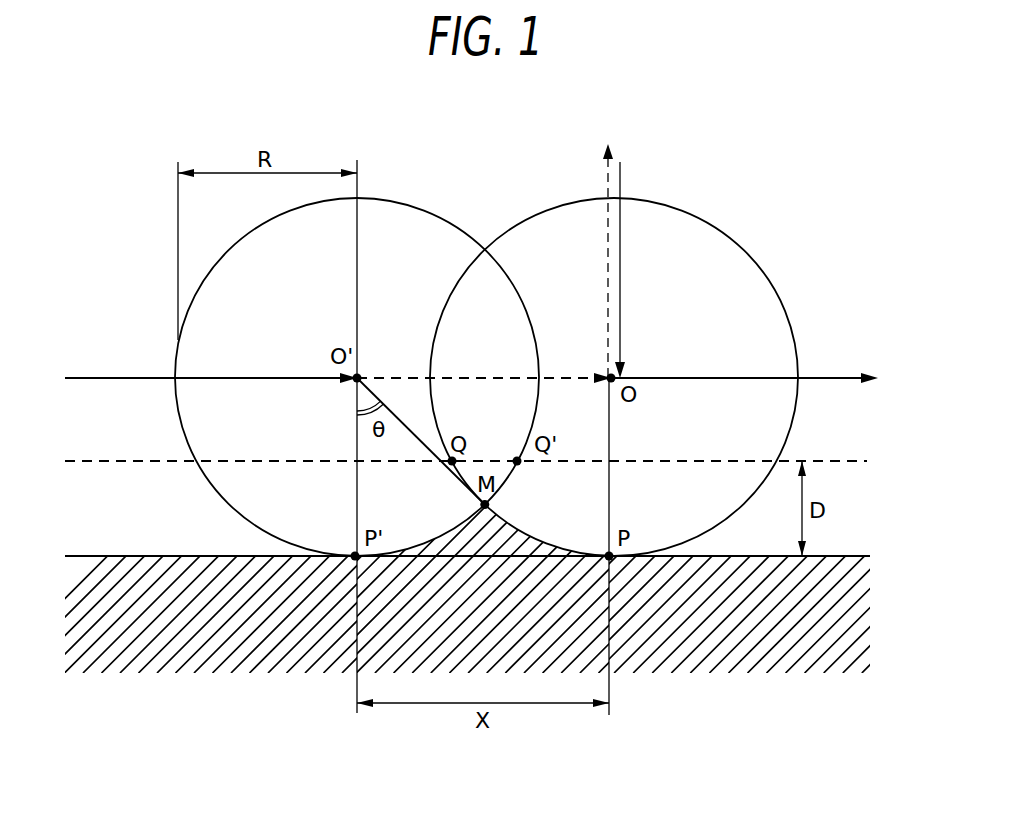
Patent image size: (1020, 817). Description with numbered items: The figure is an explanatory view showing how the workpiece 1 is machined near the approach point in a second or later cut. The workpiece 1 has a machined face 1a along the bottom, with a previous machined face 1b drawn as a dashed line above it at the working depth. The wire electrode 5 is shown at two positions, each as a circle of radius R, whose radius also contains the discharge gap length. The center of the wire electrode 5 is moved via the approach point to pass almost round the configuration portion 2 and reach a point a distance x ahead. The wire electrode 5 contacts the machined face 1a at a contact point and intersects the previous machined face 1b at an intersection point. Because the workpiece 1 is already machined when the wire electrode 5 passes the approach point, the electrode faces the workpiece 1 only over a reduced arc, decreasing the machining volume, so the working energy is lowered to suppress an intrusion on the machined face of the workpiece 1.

The workpiece 1 is at (802, 652).
The machined face 1a is at (848, 556).
The previous machined face 1b is at (848, 461).
The configuration portion 2 is at (830, 379).
The wire electrode 5 is at (432, 228).